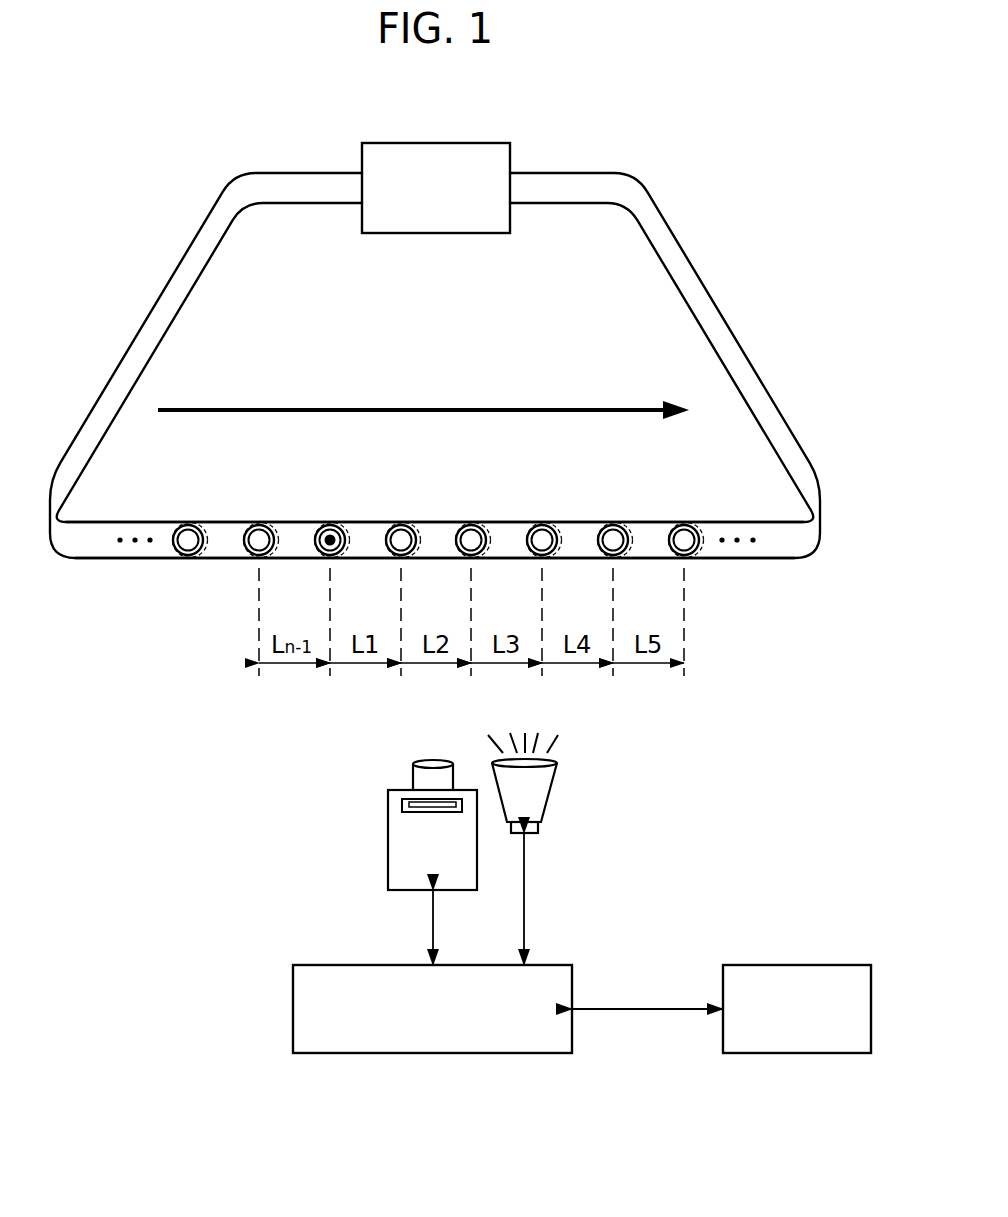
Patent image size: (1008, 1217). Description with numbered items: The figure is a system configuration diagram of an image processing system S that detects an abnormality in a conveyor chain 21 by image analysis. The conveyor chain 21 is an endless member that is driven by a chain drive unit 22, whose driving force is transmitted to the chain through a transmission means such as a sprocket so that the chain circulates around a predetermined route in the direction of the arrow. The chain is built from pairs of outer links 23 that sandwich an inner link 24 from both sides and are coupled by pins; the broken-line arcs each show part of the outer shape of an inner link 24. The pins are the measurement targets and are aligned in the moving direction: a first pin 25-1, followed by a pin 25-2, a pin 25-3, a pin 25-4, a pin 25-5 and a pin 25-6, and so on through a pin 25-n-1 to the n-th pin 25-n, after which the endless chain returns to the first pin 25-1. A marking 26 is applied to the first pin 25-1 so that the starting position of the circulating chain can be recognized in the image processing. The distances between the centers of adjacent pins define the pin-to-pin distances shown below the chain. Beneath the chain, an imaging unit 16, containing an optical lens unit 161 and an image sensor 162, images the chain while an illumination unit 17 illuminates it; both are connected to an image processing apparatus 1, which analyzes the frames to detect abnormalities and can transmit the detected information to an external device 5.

The image processing apparatus 1 is at (293, 970).
The external device 5 is at (820, 965).
The imaging unit 16 is at (388, 870).
The optical lens unit 161 is at (412, 777).
The image sensor 162 is at (402, 806).
The illumination unit 17 is at (556, 790).
The conveyor chain 21 is at (302, 172).
The chain drive unit 22 is at (468, 143).
The outer link 23 is at (168, 550).
The inner link 24 is at (295, 542).
The pin 25-n-1 is at (188, 523).
The n-th pin 25-n is at (258, 524).
The first pin 25-1 is at (330, 524).
The second pin 25-2 is at (400, 524).
The third pin 25-3 is at (473, 524).
The fourth pin 25-4 is at (545, 524).
The fifth pin 25-5 is at (615, 524).
The sixth pin 25-6 is at (686, 524).
The marking 26 is at (335, 538).
The image processing system S is at (783, 813).